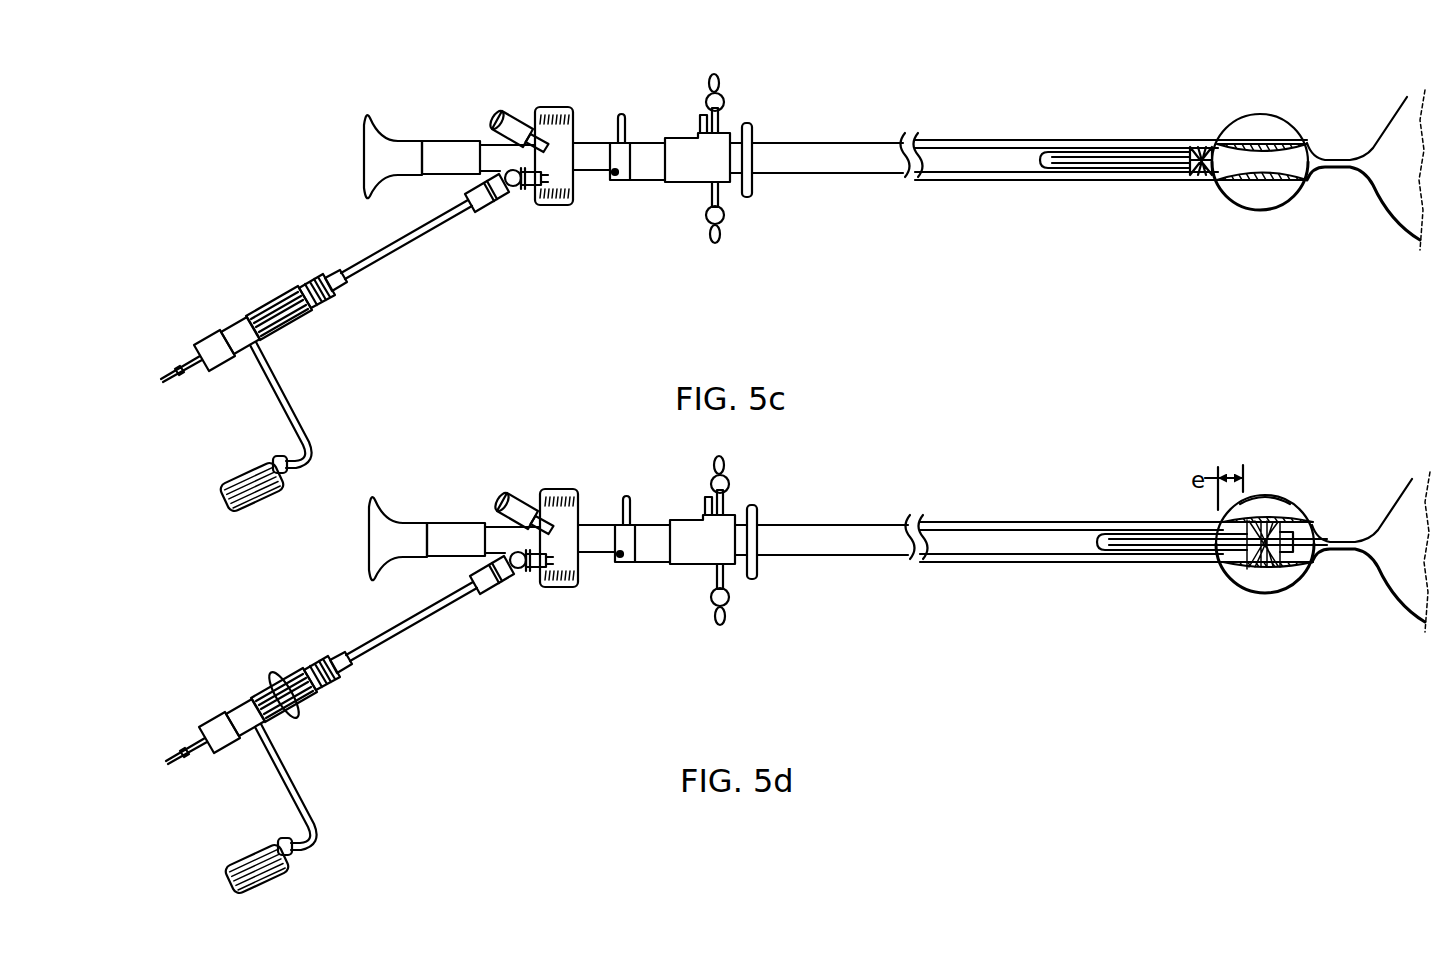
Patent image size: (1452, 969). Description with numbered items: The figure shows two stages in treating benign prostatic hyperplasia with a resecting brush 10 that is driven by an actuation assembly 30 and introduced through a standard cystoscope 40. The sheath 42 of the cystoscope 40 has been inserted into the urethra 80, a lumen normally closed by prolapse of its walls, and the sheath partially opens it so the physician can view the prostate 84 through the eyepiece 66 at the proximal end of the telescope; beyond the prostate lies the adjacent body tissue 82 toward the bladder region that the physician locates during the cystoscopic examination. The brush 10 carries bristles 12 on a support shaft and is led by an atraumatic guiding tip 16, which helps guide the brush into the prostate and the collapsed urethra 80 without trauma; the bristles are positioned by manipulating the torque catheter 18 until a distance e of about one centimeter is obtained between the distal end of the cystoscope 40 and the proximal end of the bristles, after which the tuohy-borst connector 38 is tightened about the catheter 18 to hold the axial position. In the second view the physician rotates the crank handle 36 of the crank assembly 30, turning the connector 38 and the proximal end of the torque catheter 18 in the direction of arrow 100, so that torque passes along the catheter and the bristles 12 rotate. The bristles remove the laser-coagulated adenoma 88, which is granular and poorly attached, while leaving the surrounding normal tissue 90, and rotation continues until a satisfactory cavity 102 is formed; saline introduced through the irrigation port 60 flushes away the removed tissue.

In FIG. 5c, the resecting brush 10 is at (1163, 195).
In FIG. 5d, the bristles 12 is at (1240, 578).
In FIG. 5c, the atraumatic guiding tip 16 is at (1307, 178).
In FIG. 5d, the torque catheter 18 is at (192, 781).
In FIG. 5c, the actuation assembly 30 is at (323, 366).
In FIG. 5d, the actuation assembly 30 is at (389, 702).
In FIG. 5d, the crank handle 36 is at (288, 875).
In FIG. 5d, the tuohy-borst connector 38 is at (236, 758).
In FIG. 5c, the cystoscope 40 is at (755, 242).
In FIG. 5d, the cystoscope 40 is at (710, 593).
In FIG. 5c, the sheath 42 is at (987, 140).
In FIG. 5d, the sheath 42 is at (1116, 542).
In FIG. 5c, the irrigation port 60 is at (712, 158).
In FIG. 5d, the irrigation port 60 is at (698, 540).
In FIG. 5c, the eyepiece 66 is at (388, 124).
In FIG. 5d, the eyepiece 66 is at (454, 520).
In FIG. 5c, the urethra 80 is at (1175, 140).
In FIG. 5d, the urethra 80 is at (1212, 542).
In FIG. 5c, the tissue wall 82 is at (1395, 106).
In FIG. 5d, the tissue wall 82 is at (1371, 533).
In FIG. 5c, the prostate 84 is at (1283, 118).
In FIG. 5d, the prostate 84 is at (1272, 525).
In FIG. 5c, the coagulated adenoma 88 is at (1305, 148).
In FIG. 5d, the coagulated adenoma 88 is at (1293, 533).
In FIG. 5d, the normal tissue 90 is at (1265, 466).
In FIG. 5d, the arrow 100 is at (284, 675).
In FIG. 5d, the cavity 102 is at (1320, 577).